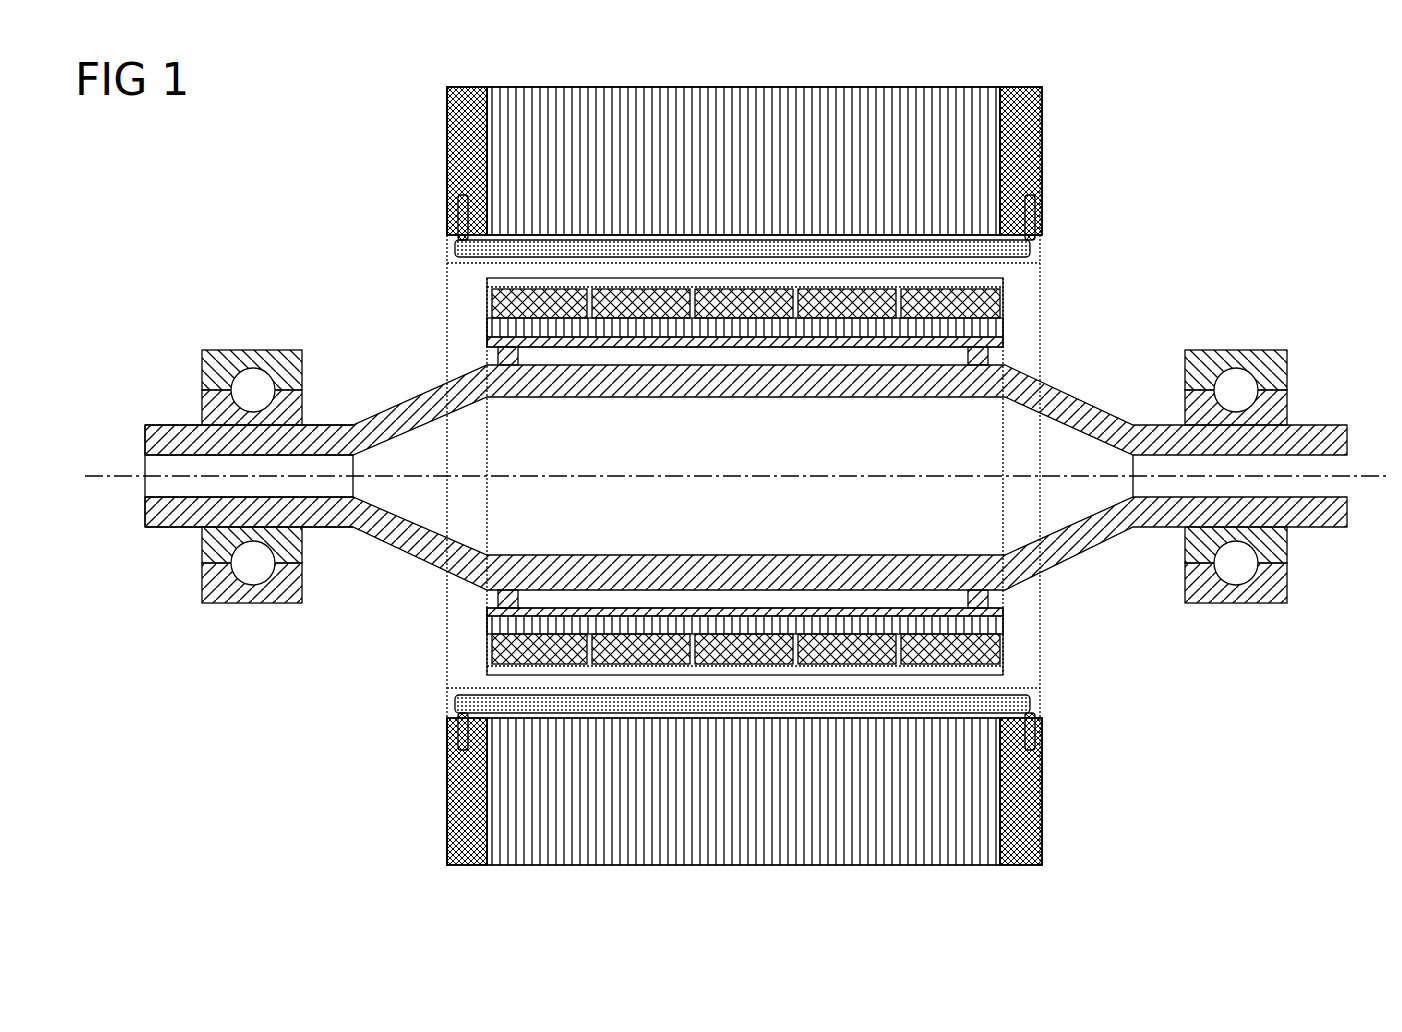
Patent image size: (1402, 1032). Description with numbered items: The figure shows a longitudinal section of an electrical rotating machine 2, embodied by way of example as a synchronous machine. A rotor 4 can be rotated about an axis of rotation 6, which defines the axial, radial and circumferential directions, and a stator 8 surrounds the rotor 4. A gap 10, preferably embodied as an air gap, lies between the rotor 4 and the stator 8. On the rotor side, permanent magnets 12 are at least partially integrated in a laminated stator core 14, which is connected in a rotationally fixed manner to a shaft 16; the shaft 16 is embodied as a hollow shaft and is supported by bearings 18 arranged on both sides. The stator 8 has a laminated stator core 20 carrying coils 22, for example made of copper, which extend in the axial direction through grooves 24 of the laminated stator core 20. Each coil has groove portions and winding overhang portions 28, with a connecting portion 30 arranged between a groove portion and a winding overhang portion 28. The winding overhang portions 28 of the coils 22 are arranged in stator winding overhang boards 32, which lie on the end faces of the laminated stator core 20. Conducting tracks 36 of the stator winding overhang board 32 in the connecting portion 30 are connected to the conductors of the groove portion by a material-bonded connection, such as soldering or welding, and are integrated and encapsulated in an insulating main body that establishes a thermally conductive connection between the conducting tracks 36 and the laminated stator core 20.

The electrical rotating machine 2 is at (1200, 128).
The rotor 4 is at (968, 336).
The axis of rotation 6 is at (1375, 480).
The stator 8 is at (972, 212).
The gap 10 is at (488, 270).
The permanent magnets 12 is at (1000, 650).
The laminated stator core 14 is at (995, 625).
The shaft 16 is at (160, 425).
The bearings 18 is at (255, 385).
The laminated stator core 20 is at (636, 100).
The coils 22 is at (1032, 250).
The grooves 24 is at (455, 212).
The winding overhang portions 28 is at (450, 770).
The connecting portion 30 is at (455, 705).
The stator winding overhang board 32 is at (450, 98).
The conducting tracks 36 is at (727, 800).